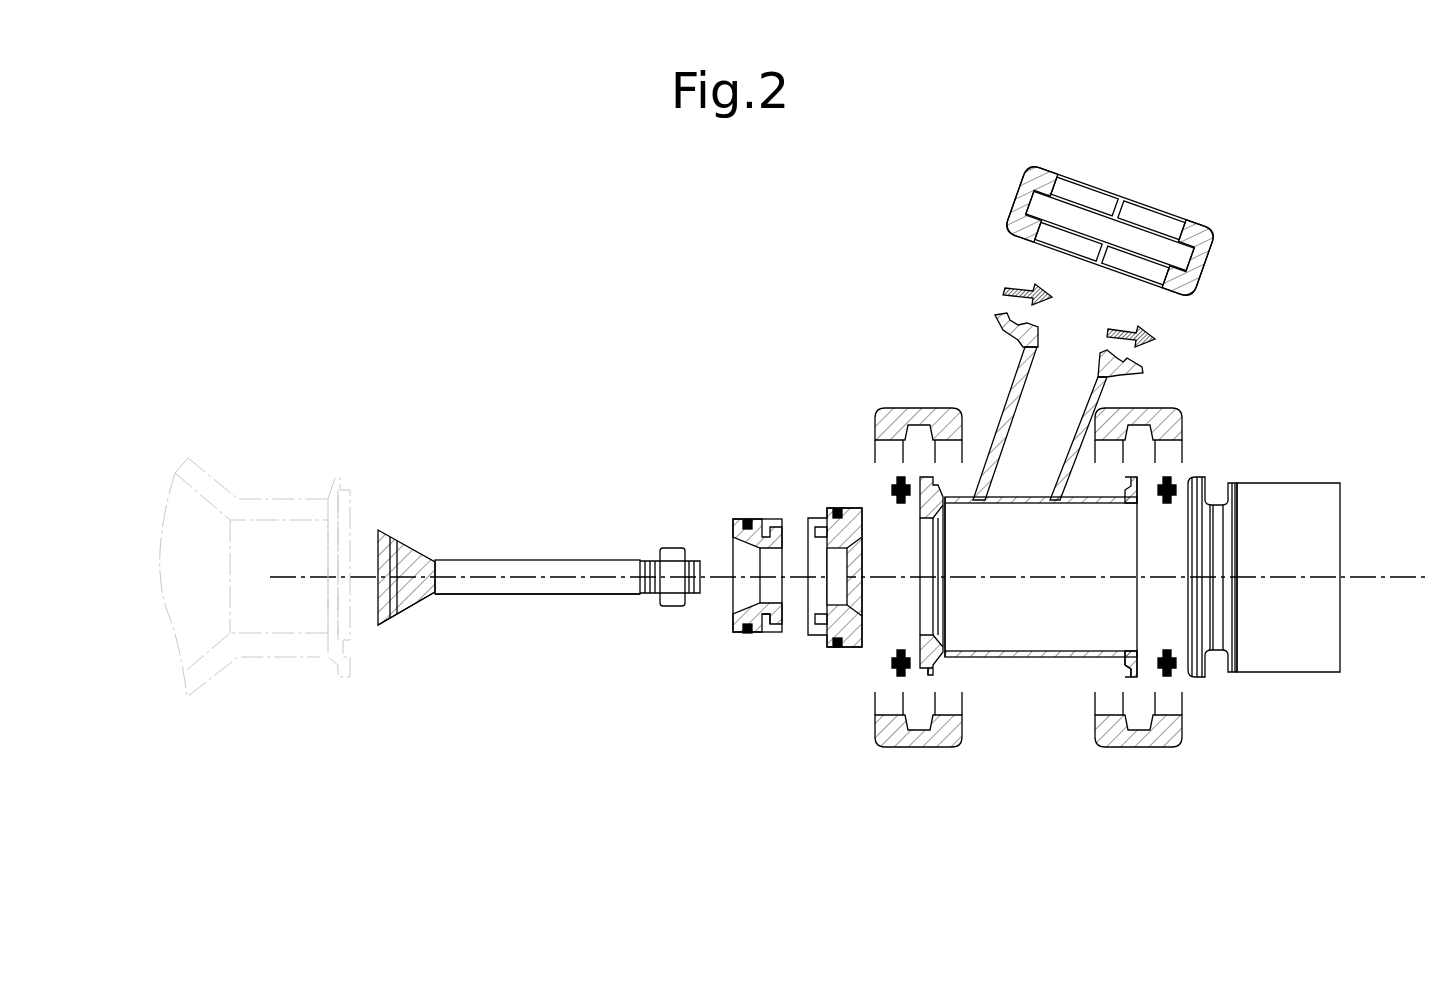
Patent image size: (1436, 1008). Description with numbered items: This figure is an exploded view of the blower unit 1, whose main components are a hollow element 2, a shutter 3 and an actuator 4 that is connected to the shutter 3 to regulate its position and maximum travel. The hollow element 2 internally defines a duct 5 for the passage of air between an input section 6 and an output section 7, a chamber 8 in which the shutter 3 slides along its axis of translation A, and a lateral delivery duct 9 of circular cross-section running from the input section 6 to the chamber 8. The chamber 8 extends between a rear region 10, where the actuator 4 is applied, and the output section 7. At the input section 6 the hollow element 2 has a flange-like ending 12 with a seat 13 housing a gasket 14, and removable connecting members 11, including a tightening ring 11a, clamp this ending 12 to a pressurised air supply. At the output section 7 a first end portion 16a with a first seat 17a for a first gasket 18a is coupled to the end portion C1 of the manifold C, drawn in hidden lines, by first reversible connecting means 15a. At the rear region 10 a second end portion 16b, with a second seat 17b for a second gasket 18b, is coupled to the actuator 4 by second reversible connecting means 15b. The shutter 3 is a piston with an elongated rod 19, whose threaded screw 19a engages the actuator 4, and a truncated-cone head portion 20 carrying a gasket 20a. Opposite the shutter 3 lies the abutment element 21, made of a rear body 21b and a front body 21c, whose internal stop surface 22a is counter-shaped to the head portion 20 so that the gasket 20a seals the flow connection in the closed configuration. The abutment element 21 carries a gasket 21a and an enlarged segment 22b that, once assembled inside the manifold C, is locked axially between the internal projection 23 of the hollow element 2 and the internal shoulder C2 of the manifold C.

The blower unit 1 is at (428, 237).
The hollow element 2 is at (1033, 668).
The shutter 3 is at (509, 612).
The actuator 4 is at (1307, 478).
The duct 5 is at (970, 515).
The input section 6 is at (1070, 352).
The output section 7 is at (910, 525).
The chamber 8 is at (1058, 623).
The lateral delivery duct 9 is at (1035, 415).
The rear region 10 is at (1125, 536).
The removable connecting members 11 is at (1222, 265).
The tightening ring 11a is at (1147, 277).
The ending 12 is at (1147, 378).
The seat 13 is at (1000, 315).
The gasket 14 is at (1012, 288).
The first reversible connecting means 15a is at (907, 760).
The second reversible connecting means 15b is at (1126, 760).
The first end portion 16a is at (930, 503).
The second end portion 16b is at (1128, 665).
The first seat 17a is at (898, 482).
The second seat 17b is at (1130, 661).
The first gasket 18a is at (895, 663).
The second gasket 18b is at (1173, 670).
The rod 19 is at (558, 565).
The screw 19a is at (682, 548).
The head portion 20 is at (415, 560).
The gasket 20a is at (393, 625).
The abutment element 21 is at (727, 513).
The gasket 21a is at (747, 633).
The rear body 21b is at (837, 646).
The front body 21c is at (767, 634).
The internal stop surface 22a is at (738, 618).
The segment 22b is at (853, 512).
The internal projection 23 is at (960, 667).
The axis of translation A is at (1380, 577).
The manifold C is at (292, 686).
The end portion C1 is at (350, 640).
The internal shoulder C2 is at (328, 635).